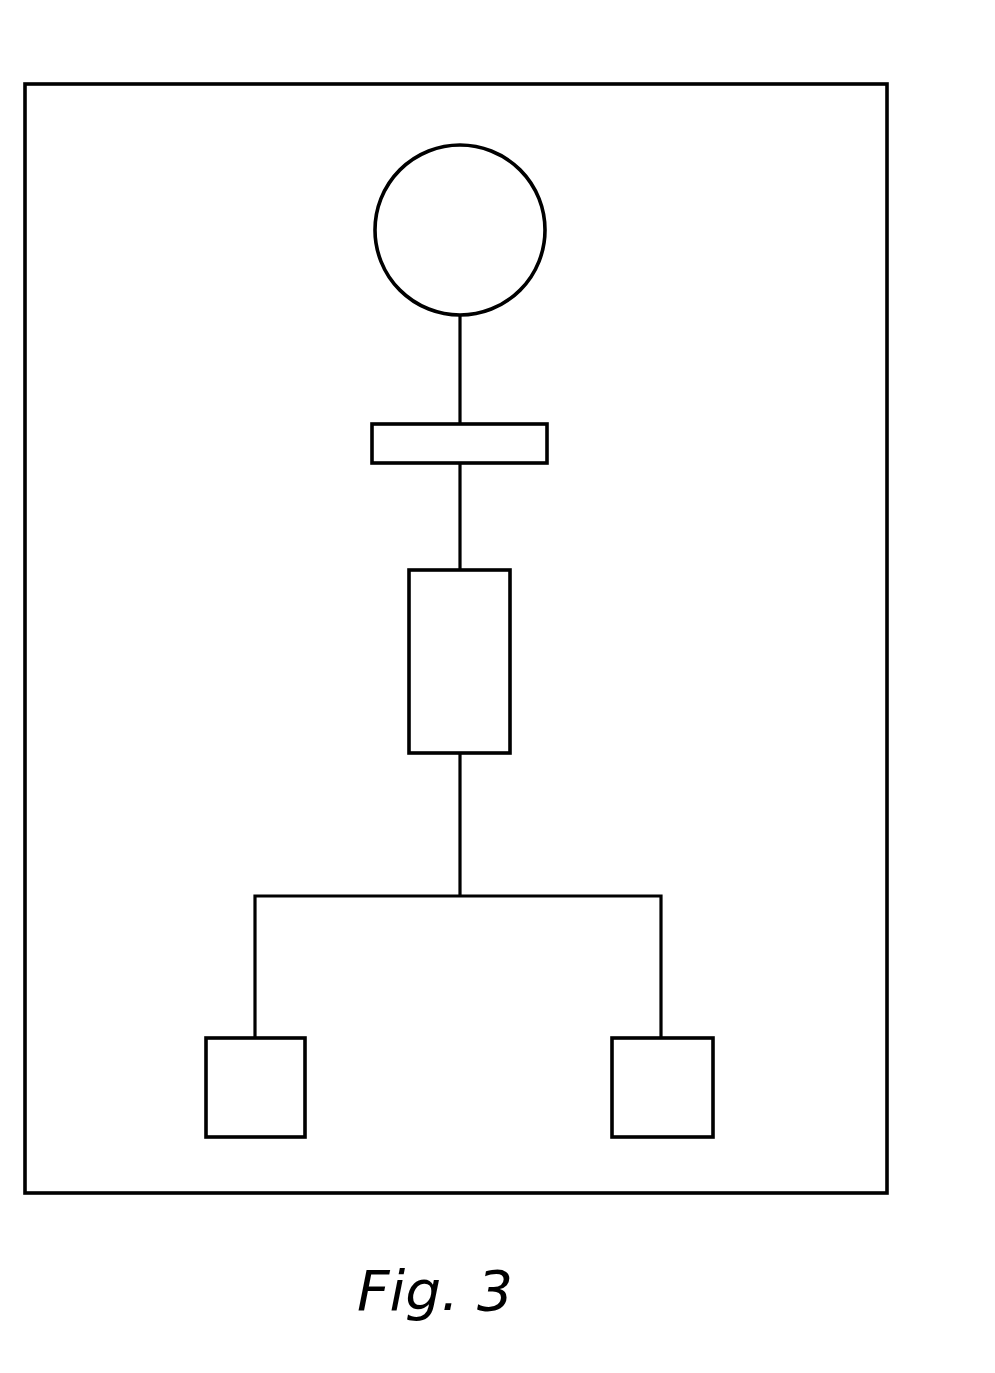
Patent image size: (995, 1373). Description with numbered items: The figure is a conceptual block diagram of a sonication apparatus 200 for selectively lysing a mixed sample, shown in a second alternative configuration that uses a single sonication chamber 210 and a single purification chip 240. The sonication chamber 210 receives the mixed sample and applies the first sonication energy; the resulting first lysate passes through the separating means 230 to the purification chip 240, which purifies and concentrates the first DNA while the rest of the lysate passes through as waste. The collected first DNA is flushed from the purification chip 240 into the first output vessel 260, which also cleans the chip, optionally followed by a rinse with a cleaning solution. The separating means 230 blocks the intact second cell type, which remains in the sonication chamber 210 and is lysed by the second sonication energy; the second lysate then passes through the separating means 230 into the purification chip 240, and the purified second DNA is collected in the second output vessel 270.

The sonication apparatus 200 is at (751, 84).
The sonication chamber 210 is at (515, 163).
The separating means 230 is at (548, 440).
The purification chip 240 is at (511, 647).
The first output vessel 260 is at (307, 1074).
The second output vessel 270 is at (714, 1075).